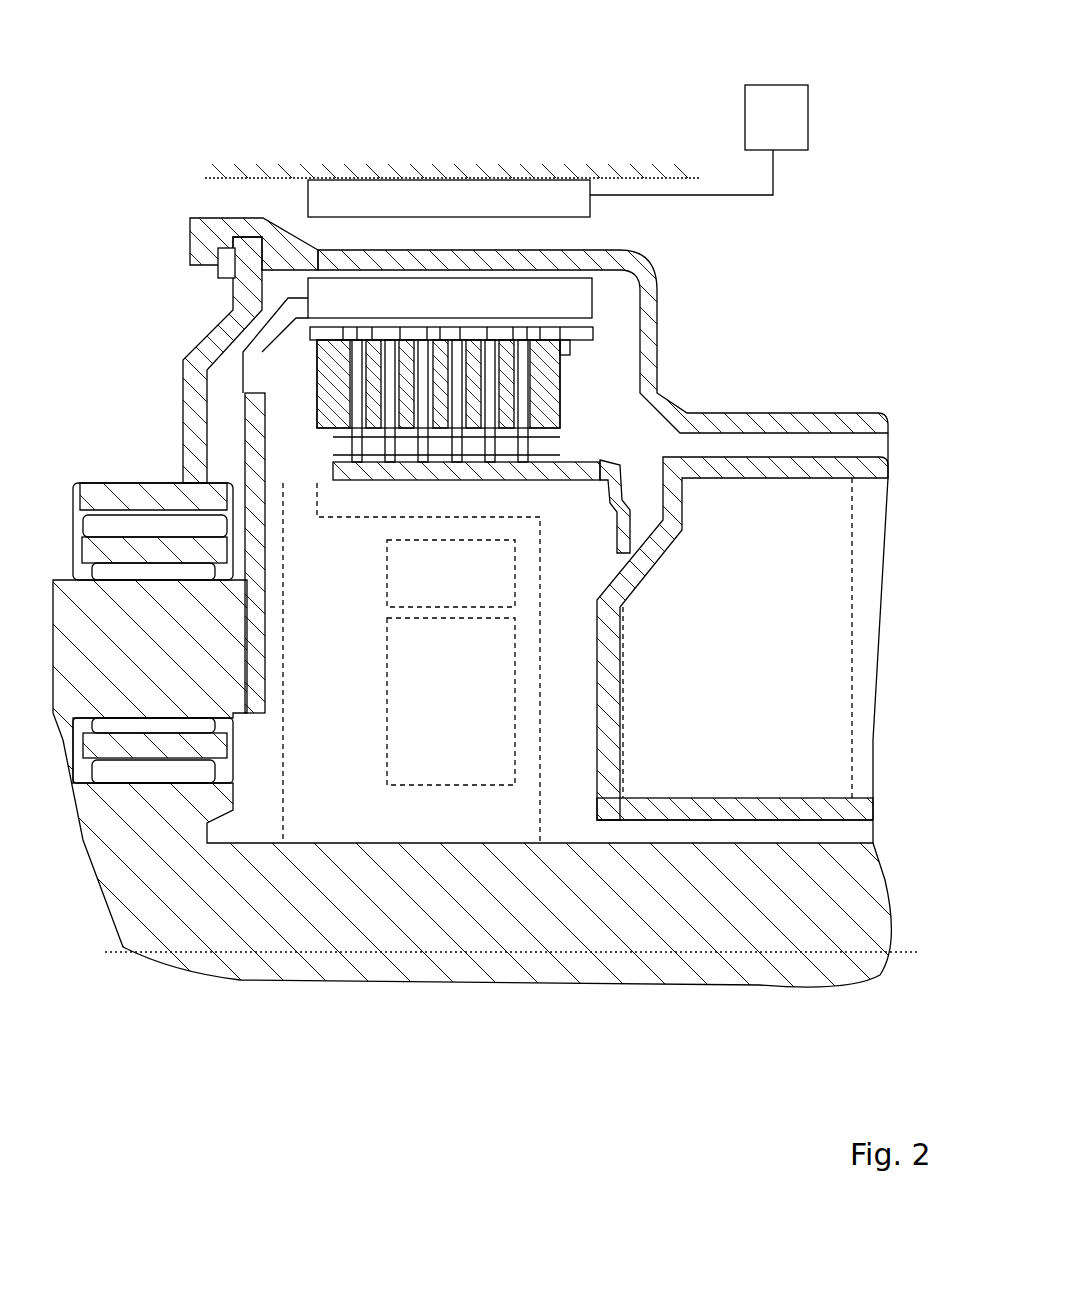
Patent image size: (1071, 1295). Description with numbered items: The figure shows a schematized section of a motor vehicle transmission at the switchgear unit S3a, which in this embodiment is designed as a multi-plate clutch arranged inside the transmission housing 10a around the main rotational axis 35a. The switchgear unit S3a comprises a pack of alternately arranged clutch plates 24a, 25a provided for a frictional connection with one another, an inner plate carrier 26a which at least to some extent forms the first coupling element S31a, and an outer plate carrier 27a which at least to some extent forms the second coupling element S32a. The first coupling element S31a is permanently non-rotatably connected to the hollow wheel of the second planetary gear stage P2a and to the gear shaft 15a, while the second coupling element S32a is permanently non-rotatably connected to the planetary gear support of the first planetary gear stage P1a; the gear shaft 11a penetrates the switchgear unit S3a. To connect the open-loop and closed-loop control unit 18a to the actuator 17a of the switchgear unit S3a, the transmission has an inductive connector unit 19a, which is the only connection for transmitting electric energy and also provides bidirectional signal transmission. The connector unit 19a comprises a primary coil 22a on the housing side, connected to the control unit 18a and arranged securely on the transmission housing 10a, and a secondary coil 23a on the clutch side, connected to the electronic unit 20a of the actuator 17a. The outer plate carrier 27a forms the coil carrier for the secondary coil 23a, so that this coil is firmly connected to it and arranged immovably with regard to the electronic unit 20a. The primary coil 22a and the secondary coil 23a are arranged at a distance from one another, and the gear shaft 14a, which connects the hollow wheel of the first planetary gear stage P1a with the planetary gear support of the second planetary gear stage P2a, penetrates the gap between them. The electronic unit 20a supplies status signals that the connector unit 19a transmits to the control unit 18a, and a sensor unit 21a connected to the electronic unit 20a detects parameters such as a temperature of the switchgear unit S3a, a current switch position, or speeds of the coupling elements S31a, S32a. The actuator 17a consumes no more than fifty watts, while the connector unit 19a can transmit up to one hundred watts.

The switchgear unit S3a is at (150, 163).
The transmission housing 10a is at (205, 176).
The clutch plates 24a is at (360, 330).
The clutch plates 25a is at (377, 373).
The primary coil 22a is at (445, 195).
The secondary coil 23a is at (495, 300).
The outer plate carrier 27a is at (600, 267).
The open-loop and closed-loop control unit 18a is at (768, 115).
The inductive connector unit 19a is at (212, 201).
The second coupling element S32a is at (185, 305).
The sensor unit 21a is at (645, 385).
The gear shaft 14a is at (803, 440).
The second planetary gear stage P2a is at (810, 523).
The first planetary gear stage P1a is at (93, 472).
The inner plate carrier 26a is at (473, 582).
The gear shaft 11a is at (223, 877).
The actuator 17a is at (347, 793).
The electronic unit 20a is at (460, 705).
The first coupling element S31a is at (582, 500).
The gear shaft 15a is at (690, 807).
The main rotational axis 35a is at (787, 957).